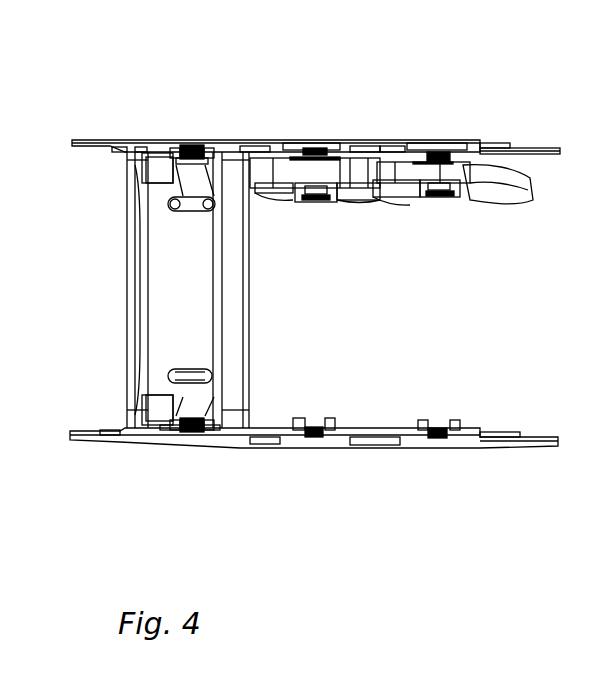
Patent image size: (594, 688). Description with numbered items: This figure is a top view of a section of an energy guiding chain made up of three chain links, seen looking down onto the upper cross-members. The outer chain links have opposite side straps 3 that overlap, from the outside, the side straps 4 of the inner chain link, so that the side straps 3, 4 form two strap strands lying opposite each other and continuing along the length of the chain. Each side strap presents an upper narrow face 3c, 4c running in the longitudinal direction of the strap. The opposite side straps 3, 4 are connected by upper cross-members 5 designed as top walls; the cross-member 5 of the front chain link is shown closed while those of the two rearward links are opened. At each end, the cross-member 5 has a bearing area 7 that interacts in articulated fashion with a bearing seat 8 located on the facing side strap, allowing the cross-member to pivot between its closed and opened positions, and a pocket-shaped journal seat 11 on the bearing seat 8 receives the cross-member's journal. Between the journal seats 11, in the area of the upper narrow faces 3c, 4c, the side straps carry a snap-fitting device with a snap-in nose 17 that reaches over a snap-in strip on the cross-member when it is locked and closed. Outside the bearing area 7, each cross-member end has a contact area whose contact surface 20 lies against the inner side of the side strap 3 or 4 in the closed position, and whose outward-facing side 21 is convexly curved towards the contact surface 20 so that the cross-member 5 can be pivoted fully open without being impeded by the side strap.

The side strap 3 is at (93, 134).
The upper narrow face 3c is at (172, 143).
The side strap 4 is at (92, 450).
The upper narrow face 4c is at (172, 450).
The upper cross-member 5 is at (120, 329).
The bearing area 7 is at (317, 210).
The bearing seat 8 is at (325, 406).
The journal seat 11 is at (418, 425).
The snap-in nose 17 is at (316, 425).
The contact surface 20 is at (283, 197).
The side of contact area 21 is at (181, 290).